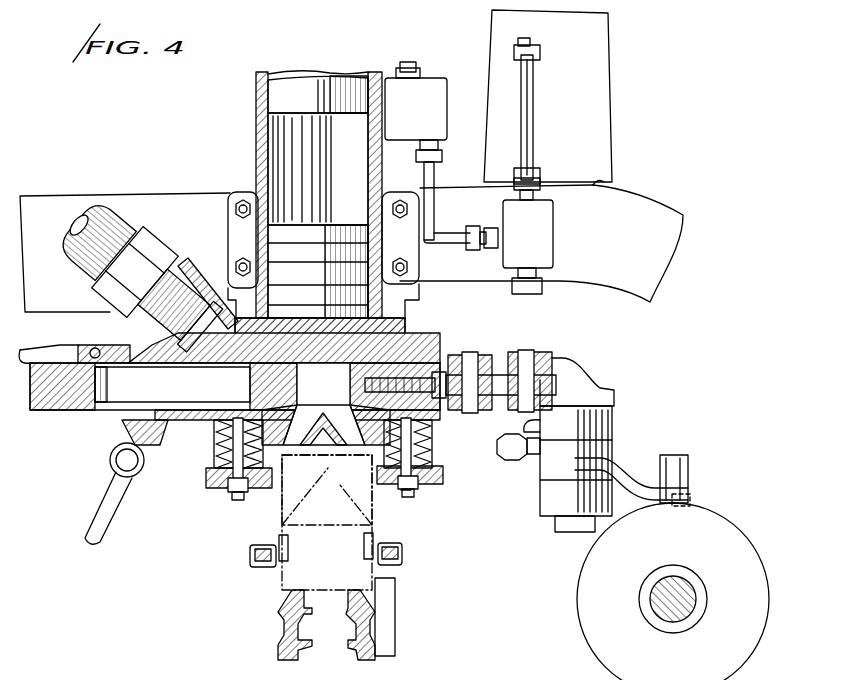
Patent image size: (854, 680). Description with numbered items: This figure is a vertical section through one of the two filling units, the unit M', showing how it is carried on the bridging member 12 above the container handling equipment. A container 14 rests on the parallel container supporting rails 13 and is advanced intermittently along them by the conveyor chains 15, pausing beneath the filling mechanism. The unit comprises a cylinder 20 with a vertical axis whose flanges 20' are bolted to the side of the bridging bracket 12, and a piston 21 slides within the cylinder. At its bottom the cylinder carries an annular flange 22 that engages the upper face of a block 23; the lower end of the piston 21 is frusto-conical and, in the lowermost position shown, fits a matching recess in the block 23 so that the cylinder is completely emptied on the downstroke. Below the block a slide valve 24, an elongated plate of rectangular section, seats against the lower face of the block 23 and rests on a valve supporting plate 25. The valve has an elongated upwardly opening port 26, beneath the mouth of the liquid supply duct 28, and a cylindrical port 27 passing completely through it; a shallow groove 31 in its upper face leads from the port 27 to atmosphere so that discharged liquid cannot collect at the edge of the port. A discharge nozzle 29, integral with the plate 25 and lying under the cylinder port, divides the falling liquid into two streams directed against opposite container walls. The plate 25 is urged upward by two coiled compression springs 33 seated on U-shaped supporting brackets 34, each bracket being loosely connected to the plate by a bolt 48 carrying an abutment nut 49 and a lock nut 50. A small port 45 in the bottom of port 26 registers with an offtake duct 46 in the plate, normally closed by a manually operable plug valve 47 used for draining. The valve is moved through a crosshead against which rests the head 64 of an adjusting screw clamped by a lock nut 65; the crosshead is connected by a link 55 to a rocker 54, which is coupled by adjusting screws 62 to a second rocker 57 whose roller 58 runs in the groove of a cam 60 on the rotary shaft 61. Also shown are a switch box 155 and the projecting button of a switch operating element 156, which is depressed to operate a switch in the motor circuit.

The bridging member 12 is at (35, 196).
The container supporting rails 13 is at (348, 628).
The container 14 is at (282, 574).
The conveyor chains 15 is at (250, 555).
The cylinder 20 is at (311, 202).
The flanges 20' is at (321, 255).
The piston 21 is at (325, 232).
The annular flange 22 is at (410, 320).
The block 23 is at (405, 340).
The slide valve 24 is at (42, 405).
The valve supporting plate 25 is at (196, 422).
The elongated port 26 is at (120, 402).
The cylindrical port 27 is at (318, 363).
The conduit or duct 28 is at (85, 262).
The discharge nozzle 29 is at (327, 490).
The groove or relief duct 31 is at (432, 360).
The coiled compression springs 33 is at (220, 452).
The supporting bracket 34 is at (218, 492).
The small port 45 is at (235, 386).
The offtake duct 46 is at (140, 432).
The plug valve 47 is at (112, 470).
The bolt 48 is at (240, 494).
The abutment nut 49 is at (237, 486).
The lock nut 50 is at (246, 497).
The rocker 54 is at (578, 364).
The link 55 is at (508, 352).
The rocker 57 is at (625, 470).
The roller 58 is at (690, 496).
The cam 60 is at (722, 530).
The rotary shaft 61 is at (673, 620).
The adjusting screws 62 is at (500, 458).
The head 64 is at (470, 355).
The lock nut 65 is at (372, 383).
The switch box 155 is at (440, 123).
The switch operating element 156 is at (416, 69).
The filling unit M' is at (227, 98).